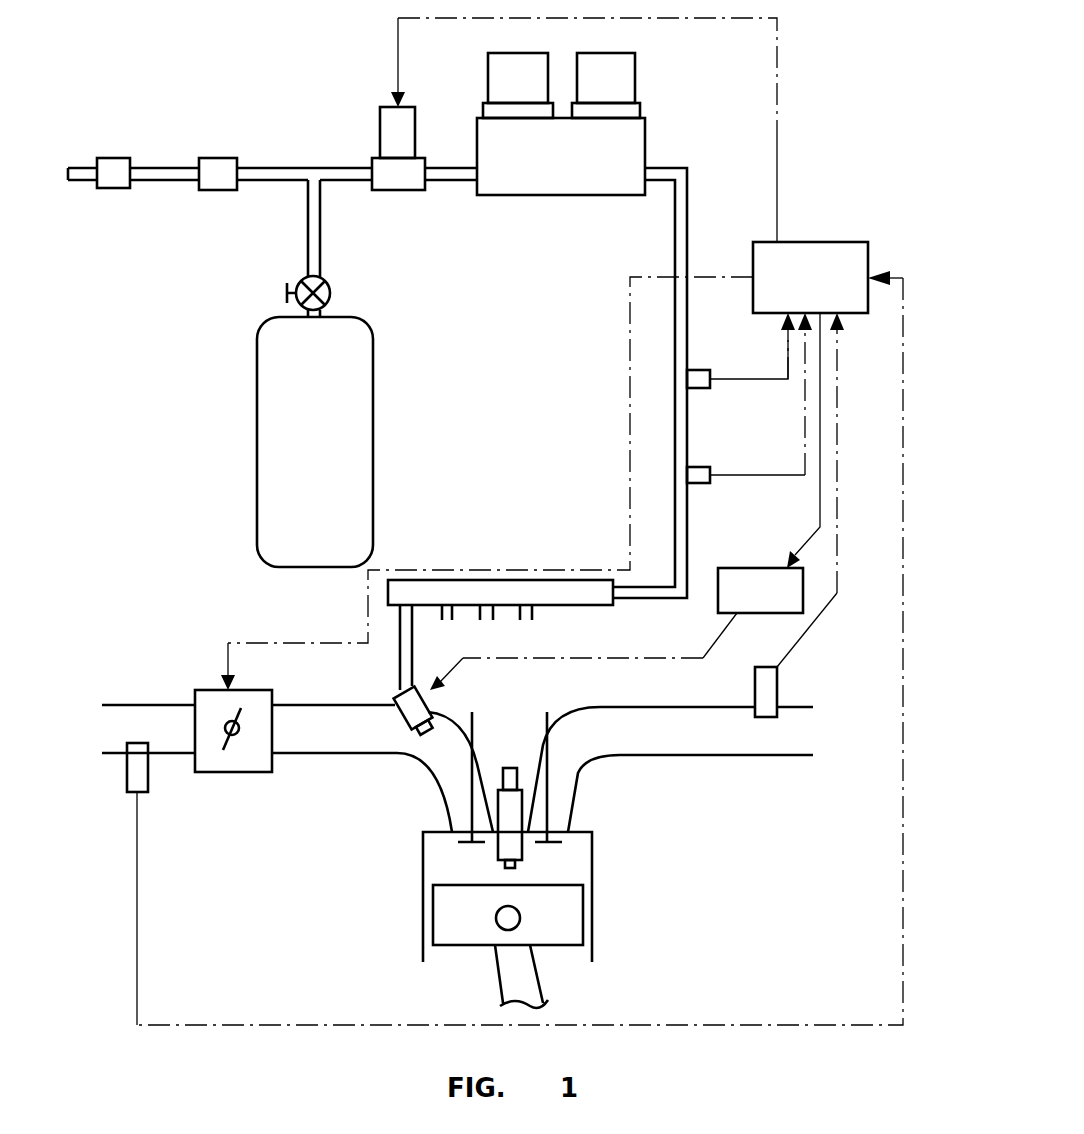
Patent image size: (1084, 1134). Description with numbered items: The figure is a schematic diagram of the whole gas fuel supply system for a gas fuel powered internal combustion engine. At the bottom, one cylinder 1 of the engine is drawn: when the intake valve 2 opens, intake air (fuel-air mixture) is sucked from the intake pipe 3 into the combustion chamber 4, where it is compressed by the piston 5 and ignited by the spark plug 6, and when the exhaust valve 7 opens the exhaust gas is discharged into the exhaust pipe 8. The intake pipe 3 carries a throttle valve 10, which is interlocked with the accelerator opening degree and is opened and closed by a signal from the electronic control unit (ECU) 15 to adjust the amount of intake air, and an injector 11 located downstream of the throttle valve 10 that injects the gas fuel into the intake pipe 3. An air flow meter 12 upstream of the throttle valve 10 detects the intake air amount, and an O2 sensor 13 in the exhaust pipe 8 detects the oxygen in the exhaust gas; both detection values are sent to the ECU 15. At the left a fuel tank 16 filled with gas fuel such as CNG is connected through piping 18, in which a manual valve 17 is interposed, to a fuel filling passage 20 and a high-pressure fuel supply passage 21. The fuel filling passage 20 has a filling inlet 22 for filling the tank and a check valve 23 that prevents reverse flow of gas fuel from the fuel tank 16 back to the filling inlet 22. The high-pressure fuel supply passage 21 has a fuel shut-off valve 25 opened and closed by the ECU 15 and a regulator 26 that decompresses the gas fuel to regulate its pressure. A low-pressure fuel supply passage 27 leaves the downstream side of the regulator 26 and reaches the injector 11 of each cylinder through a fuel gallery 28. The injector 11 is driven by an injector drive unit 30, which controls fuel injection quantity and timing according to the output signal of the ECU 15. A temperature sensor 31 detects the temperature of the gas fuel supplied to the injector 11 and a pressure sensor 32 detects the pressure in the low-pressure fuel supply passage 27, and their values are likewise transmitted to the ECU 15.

The cylinder 1 is at (423, 910).
The intake valve 2 is at (483, 770).
The intake pipe 3 is at (370, 755).
The combustion chamber 4 is at (437, 876).
The piston 5 is at (567, 922).
The spark plug 6 is at (522, 853).
The exhaust valve 7 is at (562, 778).
The exhaust pipe 8 is at (688, 757).
The throttle valve 10 is at (250, 774).
The injector 11 is at (400, 700).
The air flow meter 12 is at (133, 770).
The O2 sensor 13 is at (765, 690).
The electronic control unit (ECU) 15 is at (838, 242).
The fuel tank 16 is at (300, 441).
The manual valve 17 is at (331, 286).
The piping 18 is at (310, 236).
The fuel filling passage 20 is at (167, 182).
The high-pressure fuel supply passage 21 is at (450, 182).
The filling inlet 22 is at (110, 166).
The check valve 23 is at (222, 168).
The fuel shut-off valve 25 is at (390, 147).
The regulator (pressure regulator) 26 is at (655, 65).
The low-pressure fuel supply passage 27 is at (678, 250).
The fuel gallery 28 is at (545, 597).
The injector drive unit 30 is at (745, 582).
The temperature sensor 31 is at (697, 372).
The pressure sensor 32 is at (697, 470).